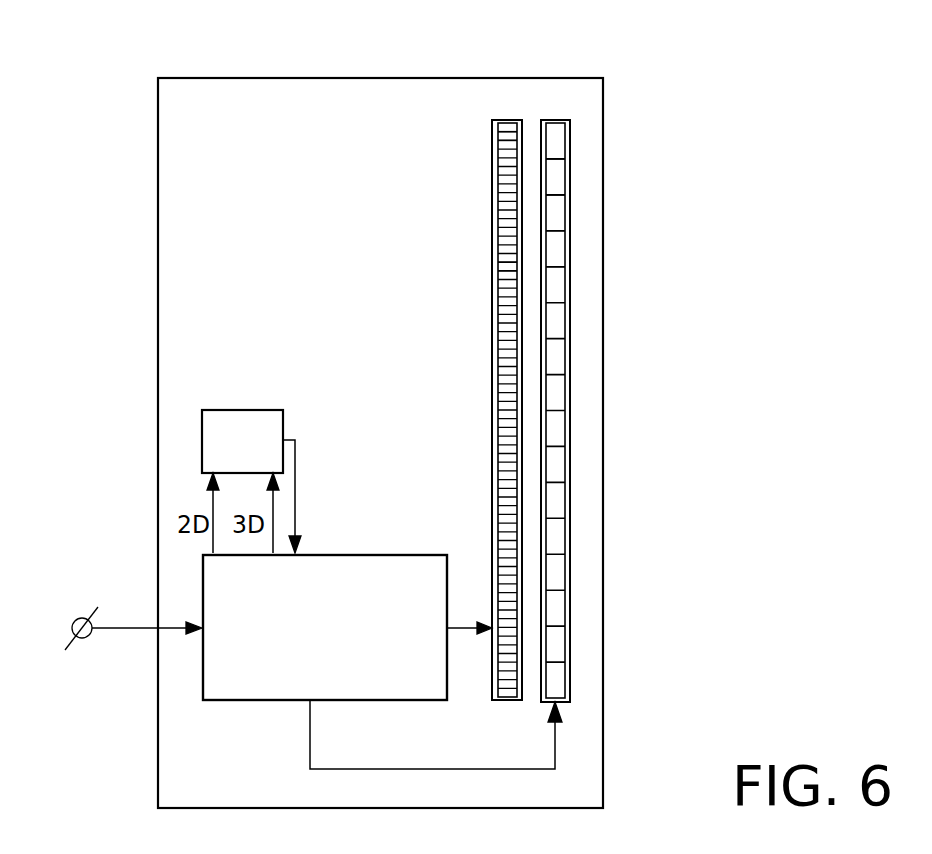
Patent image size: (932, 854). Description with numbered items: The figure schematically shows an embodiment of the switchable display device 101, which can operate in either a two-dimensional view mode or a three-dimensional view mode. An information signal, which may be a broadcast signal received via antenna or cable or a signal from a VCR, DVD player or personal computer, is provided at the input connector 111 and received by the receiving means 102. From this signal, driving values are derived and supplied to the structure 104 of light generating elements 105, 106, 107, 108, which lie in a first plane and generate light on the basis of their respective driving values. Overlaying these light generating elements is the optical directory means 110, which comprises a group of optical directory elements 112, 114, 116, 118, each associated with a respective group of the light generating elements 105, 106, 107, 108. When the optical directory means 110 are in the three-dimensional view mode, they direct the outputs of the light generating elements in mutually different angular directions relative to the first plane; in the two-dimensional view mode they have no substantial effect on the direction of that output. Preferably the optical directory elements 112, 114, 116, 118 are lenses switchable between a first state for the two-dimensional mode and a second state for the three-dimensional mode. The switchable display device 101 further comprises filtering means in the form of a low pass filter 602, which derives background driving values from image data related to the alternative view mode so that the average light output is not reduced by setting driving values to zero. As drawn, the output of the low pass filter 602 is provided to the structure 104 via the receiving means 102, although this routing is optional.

The switchable display device 101 is at (248, 34).
The receiving means 102 is at (272, 672).
The structure of light generating elements 104 is at (497, 120).
The light generating element 105 is at (505, 132).
The light generating element 106 is at (503, 137).
The light generating element 107 is at (500, 263).
The light generating element 108 is at (503, 272).
The optical directory means 110 is at (543, 118).
The input connector 111 is at (75, 618).
The optical directory element 112 is at (558, 145).
The optical directory element 114 is at (558, 177).
The optical directory element 116 is at (558, 210).
The optical directory element 118 is at (558, 248).
The low pass filter 602 is at (235, 457).